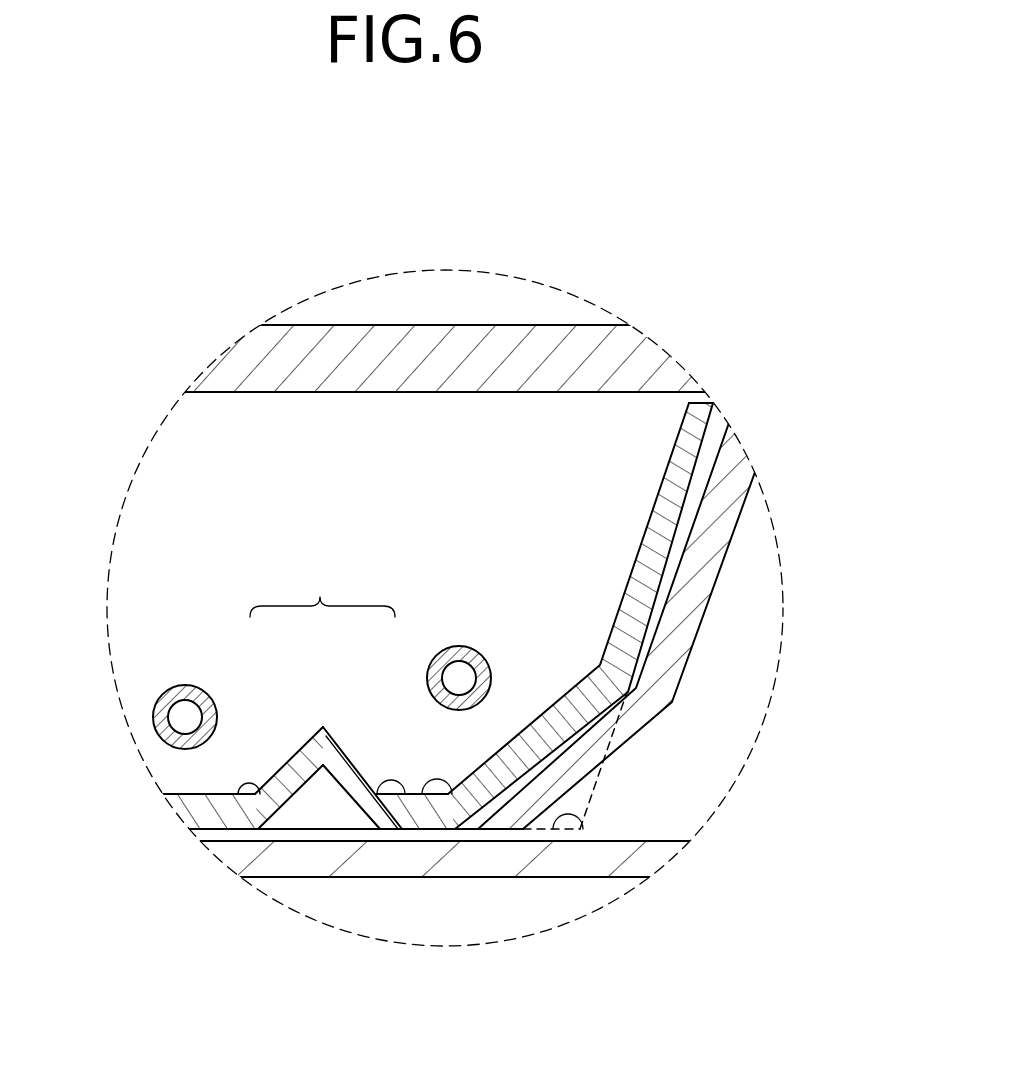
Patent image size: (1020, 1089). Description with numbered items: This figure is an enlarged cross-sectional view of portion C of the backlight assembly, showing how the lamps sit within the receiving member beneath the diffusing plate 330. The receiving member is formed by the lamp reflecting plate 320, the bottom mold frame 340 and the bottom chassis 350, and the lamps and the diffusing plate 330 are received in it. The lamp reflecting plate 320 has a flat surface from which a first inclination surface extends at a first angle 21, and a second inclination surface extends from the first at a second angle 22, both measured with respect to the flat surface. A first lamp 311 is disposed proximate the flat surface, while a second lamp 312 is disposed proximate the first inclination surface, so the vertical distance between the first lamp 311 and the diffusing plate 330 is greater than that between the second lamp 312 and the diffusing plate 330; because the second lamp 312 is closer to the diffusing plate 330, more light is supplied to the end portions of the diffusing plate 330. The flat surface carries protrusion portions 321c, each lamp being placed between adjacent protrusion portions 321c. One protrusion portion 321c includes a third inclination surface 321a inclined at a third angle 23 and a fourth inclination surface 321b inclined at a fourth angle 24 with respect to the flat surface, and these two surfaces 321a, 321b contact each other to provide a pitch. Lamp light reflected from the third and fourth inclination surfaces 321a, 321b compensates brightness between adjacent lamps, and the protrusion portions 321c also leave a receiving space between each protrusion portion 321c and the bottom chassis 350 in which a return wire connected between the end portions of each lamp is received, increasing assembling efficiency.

The diffusing plate 330 is at (246, 352).
The bottom mold frame 340 is at (720, 522).
The second lamp 312 is at (493, 672).
The first lamp 311 is at (152, 722).
The lamp reflecting plate 320 is at (174, 797).
The bottom chassis 350 is at (218, 850).
The protrusion portion 321c is at (322, 591).
The fourth inclination surface 321b is at (318, 726).
The third inclination surface 321a is at (330, 728).
The first angle 21 is at (437, 779).
The second angle 22 is at (574, 812).
The third angle 23 is at (249, 783).
The fourth angle 24 is at (392, 780).